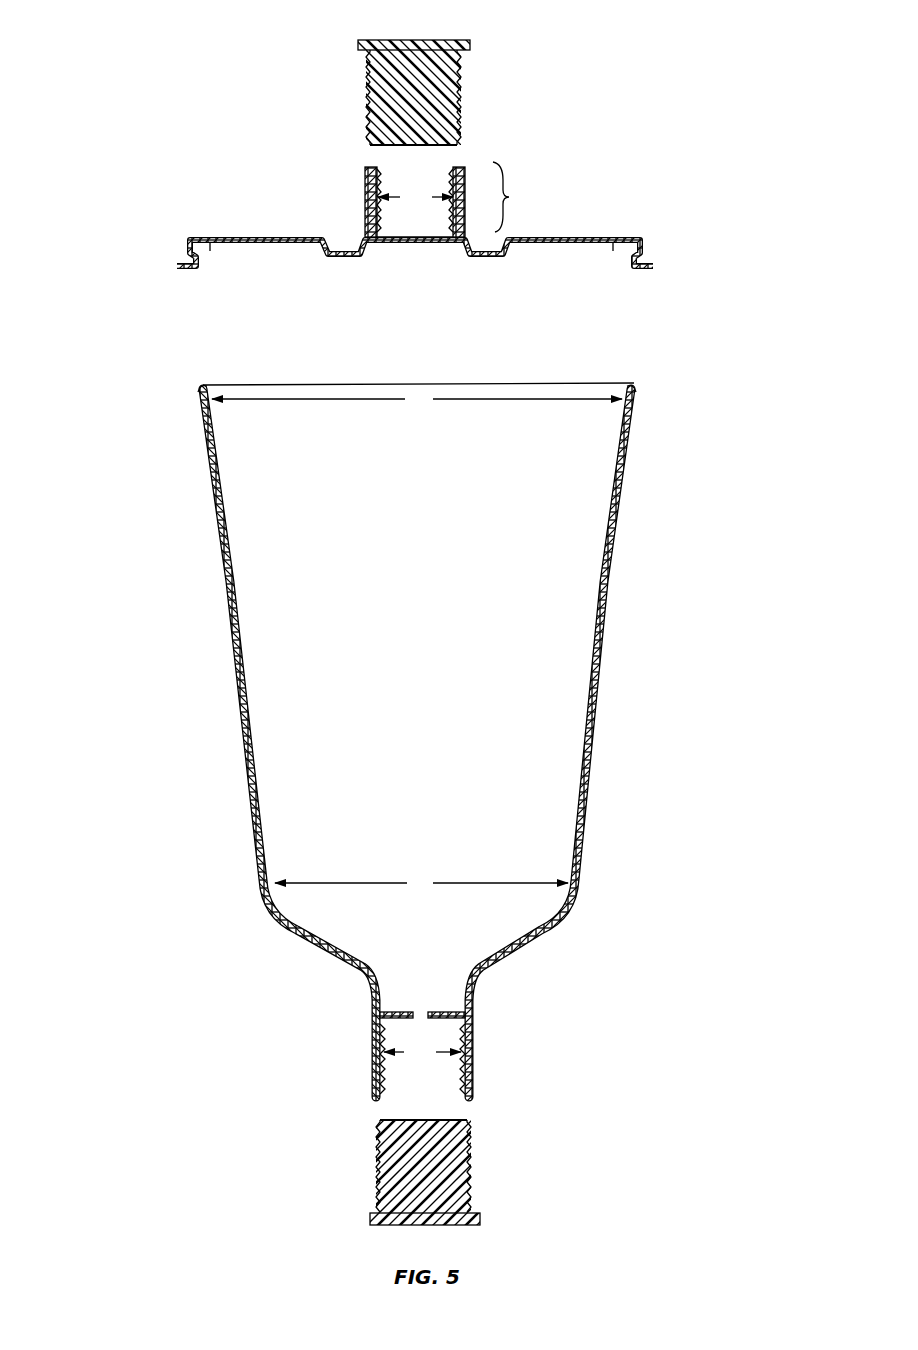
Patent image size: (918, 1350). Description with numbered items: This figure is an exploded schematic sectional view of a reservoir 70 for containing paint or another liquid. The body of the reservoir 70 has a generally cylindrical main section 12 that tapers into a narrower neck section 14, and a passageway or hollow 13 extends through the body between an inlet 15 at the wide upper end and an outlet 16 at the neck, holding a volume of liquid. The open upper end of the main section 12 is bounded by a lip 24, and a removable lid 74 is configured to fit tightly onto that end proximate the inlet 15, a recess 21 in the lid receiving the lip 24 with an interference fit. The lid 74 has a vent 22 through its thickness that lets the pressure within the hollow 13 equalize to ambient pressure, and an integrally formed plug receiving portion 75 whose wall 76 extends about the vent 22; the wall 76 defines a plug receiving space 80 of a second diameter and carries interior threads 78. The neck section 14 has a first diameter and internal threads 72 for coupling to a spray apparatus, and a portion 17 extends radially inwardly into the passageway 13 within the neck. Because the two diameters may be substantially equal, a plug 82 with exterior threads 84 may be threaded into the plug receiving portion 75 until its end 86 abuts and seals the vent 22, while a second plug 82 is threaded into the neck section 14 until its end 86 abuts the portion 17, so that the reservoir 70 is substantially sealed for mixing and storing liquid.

The reservoir 70 is at (163, 546).
The recess 21 is at (205, 262).
The removable lid 74 is at (292, 237).
The vent 22 is at (418, 247).
The wall 76 is at (463, 172).
The interior threads 78 is at (380, 166).
The plug receiving space 80 is at (418, 175).
The plug receiving portion 75 is at (515, 197).
The inlet 15 is at (473, 367).
The main section 12 is at (612, 500).
The passageway or hollow 13 is at (480, 638).
The lip 24 is at (196, 388).
The neck section 14 is at (542, 1032).
The portion 17 is at (443, 1010).
The internal threads 72 is at (380, 1073).
The outlet 16 is at (403, 1099).
The plug 82 is at (425, 60).
The exterior threads 84 is at (368, 90).
The end 86 is at (385, 148).